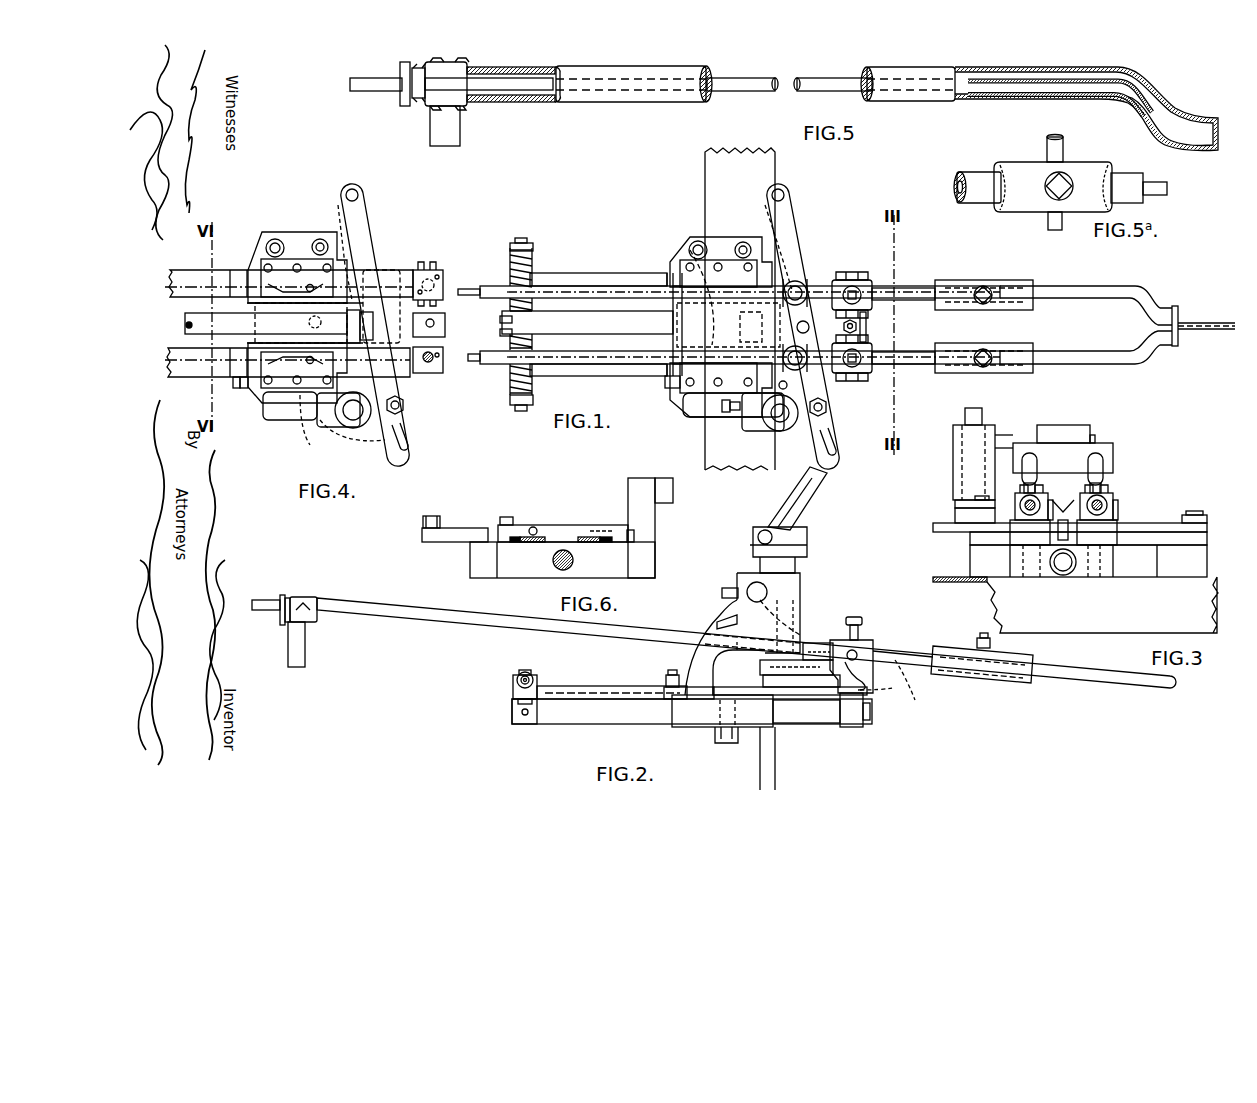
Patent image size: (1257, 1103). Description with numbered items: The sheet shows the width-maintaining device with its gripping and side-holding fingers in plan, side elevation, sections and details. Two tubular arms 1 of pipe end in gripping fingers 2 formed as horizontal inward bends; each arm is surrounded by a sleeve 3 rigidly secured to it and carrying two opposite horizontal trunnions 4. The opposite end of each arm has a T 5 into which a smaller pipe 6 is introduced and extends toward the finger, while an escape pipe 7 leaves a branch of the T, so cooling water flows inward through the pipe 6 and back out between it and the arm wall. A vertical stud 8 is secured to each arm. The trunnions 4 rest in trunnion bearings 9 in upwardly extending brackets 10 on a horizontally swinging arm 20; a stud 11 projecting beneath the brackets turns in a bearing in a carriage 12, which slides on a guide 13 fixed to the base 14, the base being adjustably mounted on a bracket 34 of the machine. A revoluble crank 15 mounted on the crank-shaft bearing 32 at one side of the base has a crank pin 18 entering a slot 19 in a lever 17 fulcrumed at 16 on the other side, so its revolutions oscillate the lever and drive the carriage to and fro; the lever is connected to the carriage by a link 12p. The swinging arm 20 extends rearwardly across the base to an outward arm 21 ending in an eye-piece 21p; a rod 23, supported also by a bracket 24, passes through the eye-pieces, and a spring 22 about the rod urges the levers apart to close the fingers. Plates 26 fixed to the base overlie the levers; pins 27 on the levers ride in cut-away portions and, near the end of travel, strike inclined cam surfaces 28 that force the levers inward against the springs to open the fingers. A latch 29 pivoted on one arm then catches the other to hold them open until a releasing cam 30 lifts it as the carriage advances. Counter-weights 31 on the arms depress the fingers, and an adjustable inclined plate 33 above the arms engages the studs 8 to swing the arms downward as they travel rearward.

In FIG. 5, the tubular arm 1 is at (630, 76).
In FIG. 5A, the tubular arm 1 is at (1131, 172).
In FIG. 1, the tubular arm 1 is at (500, 298).
In FIG. 3, the tubular arm 1 is at (1000, 512).
In FIG. 2, the tubular arm 1 is at (1152, 688).
In FIG. 5, the gripping finger 2 is at (1200, 114).
In FIG. 1, the gripping finger 2 is at (1167, 316).
In FIG. 5A, the sleeve 3 is at (1088, 170).
In FIG. 1, the sleeve 3 is at (872, 290).
In FIG. 3, the sleeve 3 is at (1085, 495).
In FIG. 2, the sleeve 3 is at (860, 640).
In FIG. 5A, the trunnion 4 is at (1058, 148).
In FIG. 4, the trunnion 4 is at (428, 268).
In FIG. 1, the trunnion 4 is at (850, 270).
In FIG. 3, the trunnion 4 is at (1015, 497).
In FIG. 2, the trunnion 4 is at (865, 640).
In FIG. 5, the T fitting 5 is at (460, 64).
In FIG. 2, the T fitting 5 is at (305, 597).
In FIG. 5, the pipe 6 is at (393, 76).
In FIG. 5A, the pipe 6 is at (1156, 180).
In FIG. 4, the pipe 6 is at (447, 292).
In FIG. 2, the pipe 6 is at (266, 600).
In FIG. 5, the escape pipe 7 is at (458, 130).
In FIG. 2, the escape pipe 7 is at (305, 652).
In FIG. 4, the stud 8 is at (448, 357).
In FIG. 1, the stud 8 is at (810, 270).
In FIG. 3, the stud 8 is at (1024, 462).
In FIG. 2, the stud 8 is at (800, 612).
In FIG. 2, the trunnion bearing 9 is at (868, 678).
In FIG. 4, the bracket 10 is at (440, 270).
In FIG. 1, the bracket 10 is at (866, 285).
In FIG. 3, the bracket 10 is at (1115, 508).
In FIG. 2, the bracket 10 is at (880, 647).
In FIG. 4, the stud 11 is at (440, 368).
In FIG. 1, the stud 11 is at (446, 366).
In FIG. 4, the carriage 12 is at (446, 308).
In FIG. 3, the carriage 12 is at (1098, 578).
In FIG. 2, the carriage 12 is at (855, 713).
In FIG. 1, the bolt 12p is at (866, 328).
In FIG. 2, the bolt 12p is at (901, 680).
In FIG. 4, the guide 13 is at (446, 322).
In FIG. 1, the guide 13 is at (447, 325).
In FIG. 3, the guide 13 is at (1065, 575).
In FIG. 2, the guide 13 is at (808, 715).
In FIG. 4, the base 14 is at (262, 252).
In FIG. 1, the base 14 is at (690, 246).
In FIG. 3, the base 14 is at (1155, 565).
In FIG. 6, the base 14 is at (480, 563).
In FIG. 2, the base 14 is at (703, 710).
In FIG. 4, the crank 15 is at (398, 384).
In FIG. 1, the crank 15 is at (834, 428).
In FIG. 3, the crank 15 is at (958, 516).
In FIG. 2, the crank 15 is at (770, 668).
In FIG. 4, the fulcrum 16 is at (362, 194).
In FIG. 1, the fulcrum 16 is at (790, 194).
In FIG. 3, the fulcrum 16 is at (1198, 516).
In FIG. 6, the fulcrum 16 is at (433, 515).
In FIG. 4, the lever 17 is at (360, 260).
In FIG. 1, the lever 17 is at (792, 250).
In FIG. 3, the lever 17 is at (940, 527).
In FIG. 6, the lever 17 is at (460, 520).
In FIG. 4, the crank pin 18 is at (405, 404).
In FIG. 1, the crank pin 18 is at (835, 408).
In FIG. 3, the crank pin 18 is at (955, 502).
In FIG. 2, the crank pin 18 is at (822, 645).
In FIG. 4, the slot 19 is at (408, 430).
In FIG. 1, the slot 19 is at (840, 447).
In FIG. 4, the swinging arm 20 is at (192, 268).
In FIG. 1, the swinging arm 20 is at (578, 283).
In FIG. 6, the swinging arm 20 is at (540, 525).
In FIG. 2, the swinging arm 20 is at (590, 684).
In FIG. 1, the arm 21 is at (535, 262).
In FIG. 2, the arm 21 is at (513, 688).
In FIG. 1, the eye-piece 21p is at (532, 244).
In FIG. 2, the eye-piece 21p is at (519, 673).
In FIG. 1, the spring 22 is at (510, 256).
In FIG. 1, the rod 23 is at (512, 390).
In FIG. 2, the rod 23 is at (529, 672).
In FIG. 4, the bracket 24 is at (183, 323).
In FIG. 1, the bracket 24 is at (612, 320).
In FIG. 6, the bracket 24 is at (552, 568).
In FIG. 2, the bracket 24 is at (603, 705).
In FIG. 4, the plate 26 is at (262, 270).
In FIG. 1, the plate 26 is at (682, 266).
In FIG. 6, the plate 26 is at (512, 517).
In FIG. 2, the plate 26 is at (745, 690).
In FIG. 4, the pin 27 is at (309, 325).
In FIG. 4, the cam surface 28 is at (323, 306).
In FIG. 1, the cam surface 28 is at (728, 298).
In FIG. 4, the latch 29 is at (240, 388).
In FIG. 1, the latch 29 is at (673, 337).
In FIG. 6, the latch 29 is at (585, 527).
In FIG. 2, the latch 29 is at (683, 686).
In FIG. 4, the releasing cam 30 is at (240, 380).
In FIG. 1, the releasing cam 30 is at (665, 382).
In FIG. 6, the releasing cam 30 is at (640, 535).
In FIG. 2, the releasing cam 30 is at (666, 684).
In FIG. 1, the counter-weight 31 is at (940, 282).
In FIG. 2, the counter-weight 31 is at (1005, 676).
In FIG. 4, the bearing 32 is at (292, 410).
In FIG. 1, the bearing 32 is at (705, 417).
In FIG. 3, the bearing 32 is at (968, 463).
In FIG. 6, the bearing 32 is at (673, 490).
In FIG. 2, the bearing 32 is at (715, 635).
In FIG. 3, the plate 33 is at (1105, 447).
In FIG. 2, the plate 33 is at (800, 595).
In FIG. 1, the bracket 34 is at (725, 182).
In FIG. 3, the bracket 34 is at (1192, 588).
In FIG. 2, the bracket 34 is at (777, 745).